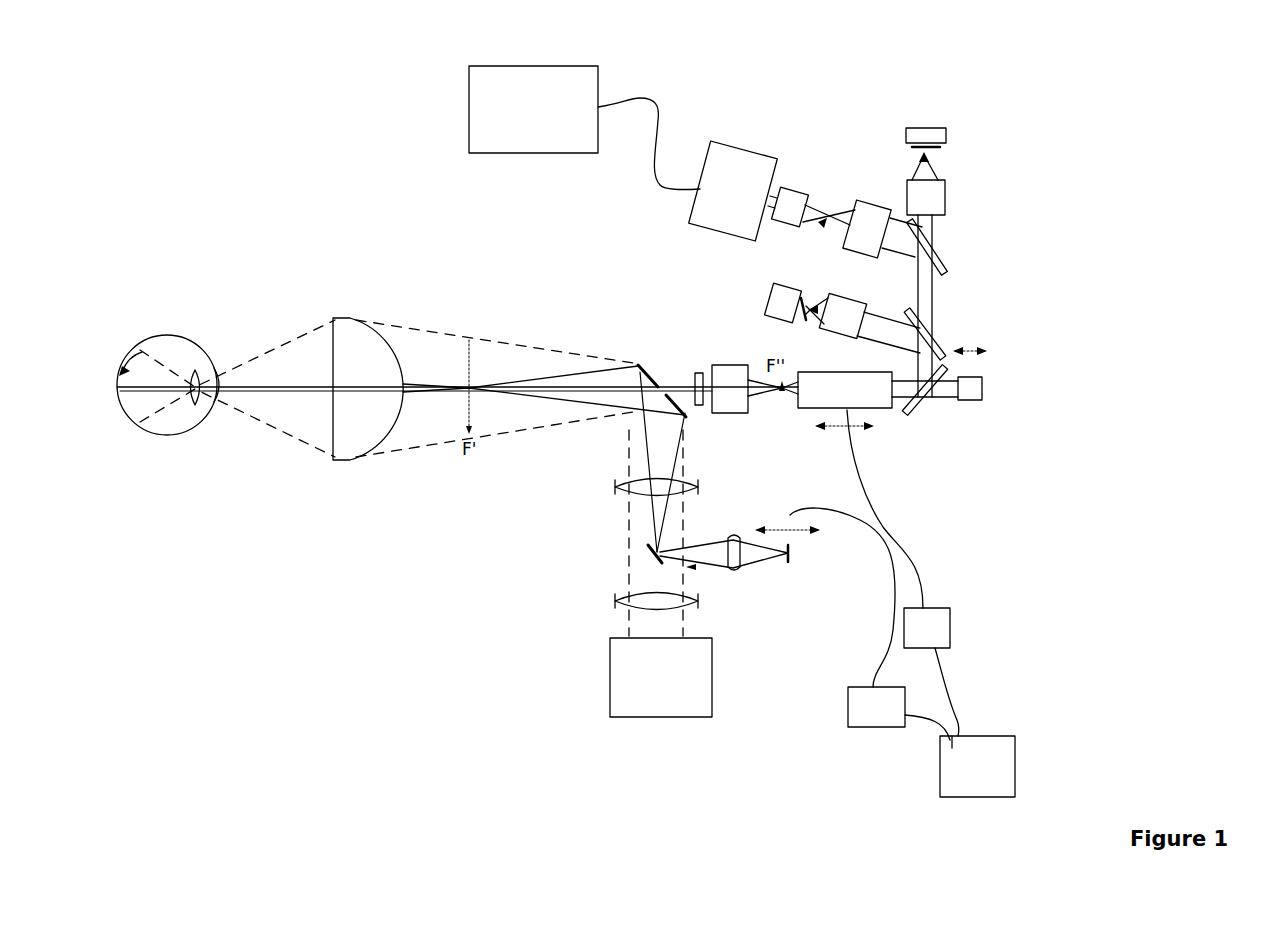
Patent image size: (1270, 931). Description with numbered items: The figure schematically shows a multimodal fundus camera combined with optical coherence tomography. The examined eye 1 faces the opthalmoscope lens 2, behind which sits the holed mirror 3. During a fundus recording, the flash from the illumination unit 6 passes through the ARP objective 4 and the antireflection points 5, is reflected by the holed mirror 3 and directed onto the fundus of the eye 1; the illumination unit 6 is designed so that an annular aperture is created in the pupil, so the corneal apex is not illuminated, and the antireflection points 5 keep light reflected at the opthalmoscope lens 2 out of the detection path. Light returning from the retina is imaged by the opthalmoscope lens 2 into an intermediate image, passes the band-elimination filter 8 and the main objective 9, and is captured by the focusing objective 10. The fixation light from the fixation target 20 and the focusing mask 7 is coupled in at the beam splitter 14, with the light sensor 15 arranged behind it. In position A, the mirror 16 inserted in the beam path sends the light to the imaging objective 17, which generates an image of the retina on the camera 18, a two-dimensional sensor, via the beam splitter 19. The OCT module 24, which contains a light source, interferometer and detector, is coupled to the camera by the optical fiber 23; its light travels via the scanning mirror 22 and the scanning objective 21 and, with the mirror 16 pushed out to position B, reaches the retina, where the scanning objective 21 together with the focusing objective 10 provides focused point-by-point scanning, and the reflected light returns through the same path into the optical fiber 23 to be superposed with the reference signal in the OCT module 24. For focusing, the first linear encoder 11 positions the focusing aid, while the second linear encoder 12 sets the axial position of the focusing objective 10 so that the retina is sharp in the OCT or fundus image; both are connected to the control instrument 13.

The eye 1 is at (150, 435).
The opthalmoscope lens 2 is at (345, 462).
The holed mirror 3 is at (641, 362).
The ARP objective 4 is at (592, 512).
The antireflection points 5 is at (663, 520).
The illumination unit 6 is at (610, 697).
The focusing mask 7 is at (791, 566).
The band-elimination filter 8 is at (692, 370).
The main objective 9 is at (723, 362).
The focusing objective 10 is at (880, 410).
The linear encoder 1 11 is at (950, 622).
The linear encoder 2 12 is at (868, 728).
The control instrument 13 is at (995, 735).
The beam splitter 14 is at (930, 415).
The light sensor 15 is at (985, 390).
The mirror 16 is at (937, 340).
The imaging objective 17 is at (868, 195).
The camera/2D sensor 18 is at (768, 300).
The beam splitter 19 is at (947, 255).
The fixation target 20 is at (945, 130).
The scanning objective 21 is at (800, 185).
The scanning mirror 22 is at (712, 140).
The optical fiber 23 is at (650, 97).
The OCT module 24 is at (469, 100).